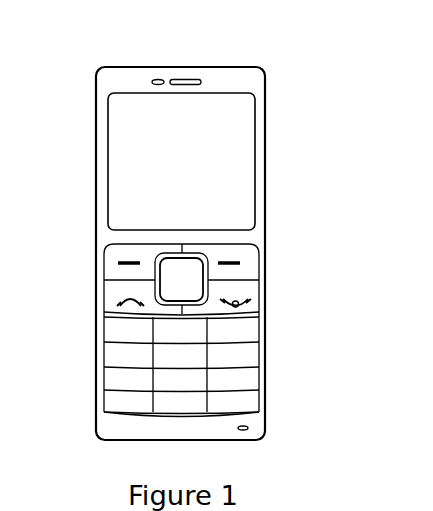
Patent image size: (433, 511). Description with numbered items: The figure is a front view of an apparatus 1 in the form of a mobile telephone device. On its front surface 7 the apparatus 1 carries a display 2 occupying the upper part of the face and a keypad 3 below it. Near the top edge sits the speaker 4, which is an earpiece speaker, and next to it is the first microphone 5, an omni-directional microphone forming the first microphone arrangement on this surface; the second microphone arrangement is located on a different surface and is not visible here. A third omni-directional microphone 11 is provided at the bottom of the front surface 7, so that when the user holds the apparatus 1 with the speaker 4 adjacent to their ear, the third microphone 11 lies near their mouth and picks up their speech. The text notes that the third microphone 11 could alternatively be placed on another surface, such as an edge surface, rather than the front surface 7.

The apparatus 1 is at (208, 223).
The display 2 is at (243, 201).
The keypad 3 is at (260, 318).
The speaker 4 is at (182, 72).
The first microphone 5 is at (167, 72).
The front surface 7 is at (103, 230).
The third microphone 11 is at (252, 428).